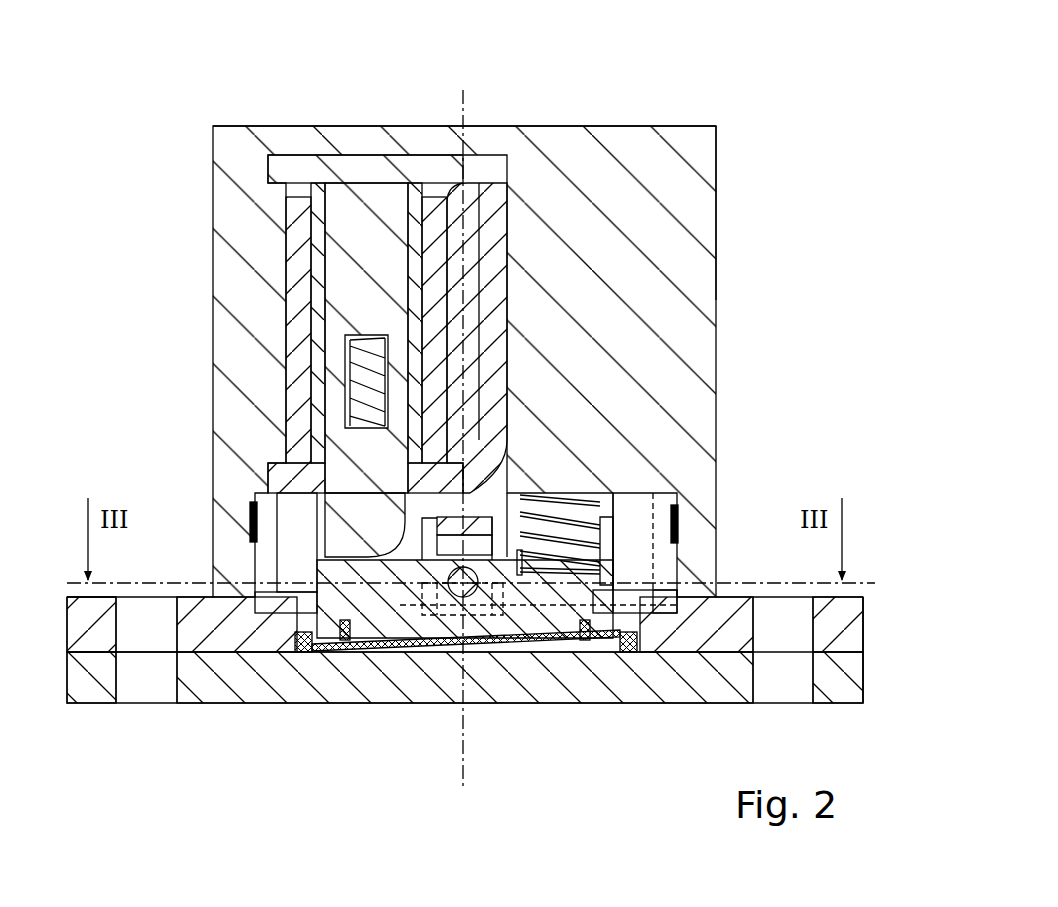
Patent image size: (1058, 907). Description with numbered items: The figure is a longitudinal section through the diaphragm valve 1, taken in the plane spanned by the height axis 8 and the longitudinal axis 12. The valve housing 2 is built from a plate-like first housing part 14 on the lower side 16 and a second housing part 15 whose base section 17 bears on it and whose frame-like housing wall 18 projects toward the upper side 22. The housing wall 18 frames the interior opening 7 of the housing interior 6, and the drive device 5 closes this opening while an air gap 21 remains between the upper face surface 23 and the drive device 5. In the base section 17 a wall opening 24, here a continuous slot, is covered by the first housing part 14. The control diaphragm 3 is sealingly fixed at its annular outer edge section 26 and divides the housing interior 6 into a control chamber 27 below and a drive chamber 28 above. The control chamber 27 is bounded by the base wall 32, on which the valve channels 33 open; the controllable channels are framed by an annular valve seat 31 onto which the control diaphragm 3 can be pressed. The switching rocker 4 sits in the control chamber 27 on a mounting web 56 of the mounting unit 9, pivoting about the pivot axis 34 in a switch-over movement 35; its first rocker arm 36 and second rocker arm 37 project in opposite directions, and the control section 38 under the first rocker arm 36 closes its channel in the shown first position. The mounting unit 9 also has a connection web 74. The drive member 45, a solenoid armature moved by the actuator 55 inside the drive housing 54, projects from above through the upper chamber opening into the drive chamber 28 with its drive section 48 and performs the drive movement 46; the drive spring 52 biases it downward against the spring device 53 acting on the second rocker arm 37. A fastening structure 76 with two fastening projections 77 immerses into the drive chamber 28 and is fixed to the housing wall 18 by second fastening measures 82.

The diaphragm valve 1 is at (744, 76).
The valve housing 2 is at (832, 708).
The control diaphragm 3 is at (438, 642).
The switching rocker 4 is at (262, 640).
The drive device 5 is at (702, 150).
The housing interior 6 is at (697, 494).
The interior opening 7 is at (706, 509).
The height axis 8 is at (460, 97).
The mounting unit 9 is at (612, 419).
The longitudinal axis 12 is at (852, 583).
The first housing part 14 is at (100, 708).
The second housing part 15 is at (72, 603).
The lower side 16 is at (185, 708).
The base section 17 is at (666, 615).
The housing wall 18 is at (749, 492).
The air gap 21 is at (340, 590).
The upper side 22 is at (625, 122).
The upper face surface 23 is at (745, 464).
The wall opening 24 is at (318, 614).
The outer edge section 26 is at (300, 654).
The control chamber 27 is at (632, 654).
The drive chamber 28 is at (699, 465).
The valve seat 31 is at (383, 652).
The base wall 32 is at (497, 652).
The valve channels 33 is at (367, 652).
The pivot axis 34 is at (408, 642).
The switch-over movement 35 is at (641, 432).
The first rocker arm 36 is at (340, 647).
The second rocker arm 37 is at (607, 647).
The control section 38 is at (350, 642).
The drive member 45 is at (340, 425).
The drive movement 46 is at (365, 470).
The drive section 48 is at (372, 533).
The drive spring 52 is at (362, 352).
The spring device 53 is at (657, 446).
The drive housing 54 is at (697, 205).
The actuator 55 is at (493, 160).
The mounting web 56 is at (480, 598).
The connection web 74 is at (610, 396).
The fastening structure 76 is at (672, 564).
The fastening projections 77 is at (655, 578).
The second fastening measures 82 is at (680, 522).